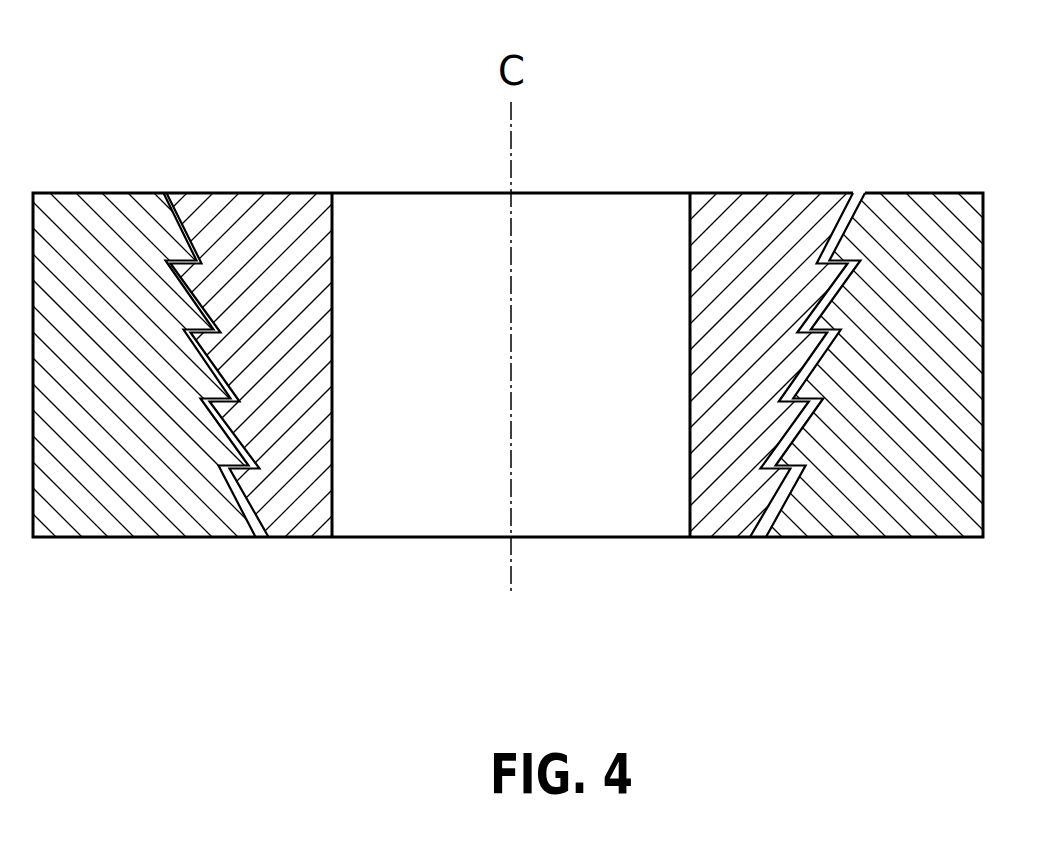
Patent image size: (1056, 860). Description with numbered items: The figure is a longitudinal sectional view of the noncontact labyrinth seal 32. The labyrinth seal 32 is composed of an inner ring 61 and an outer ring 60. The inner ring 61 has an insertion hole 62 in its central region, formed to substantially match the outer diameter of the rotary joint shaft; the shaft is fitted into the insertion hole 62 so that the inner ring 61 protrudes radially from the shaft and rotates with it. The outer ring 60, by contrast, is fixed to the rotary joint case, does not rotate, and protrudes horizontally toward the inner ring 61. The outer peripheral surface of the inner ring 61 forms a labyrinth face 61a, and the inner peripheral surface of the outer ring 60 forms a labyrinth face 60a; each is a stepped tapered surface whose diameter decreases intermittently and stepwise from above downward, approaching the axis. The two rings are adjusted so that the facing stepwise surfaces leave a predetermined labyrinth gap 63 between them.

The labyrinth seal 32 is at (908, 172).
The outer ring 60 is at (92, 193).
The labyrinth face 60a is at (763, 503).
The inner ring 61 is at (753, 192).
The labyrinth face 61a is at (252, 513).
The insertion hole 62 is at (334, 253).
The labyrinth gap 63 is at (168, 213).